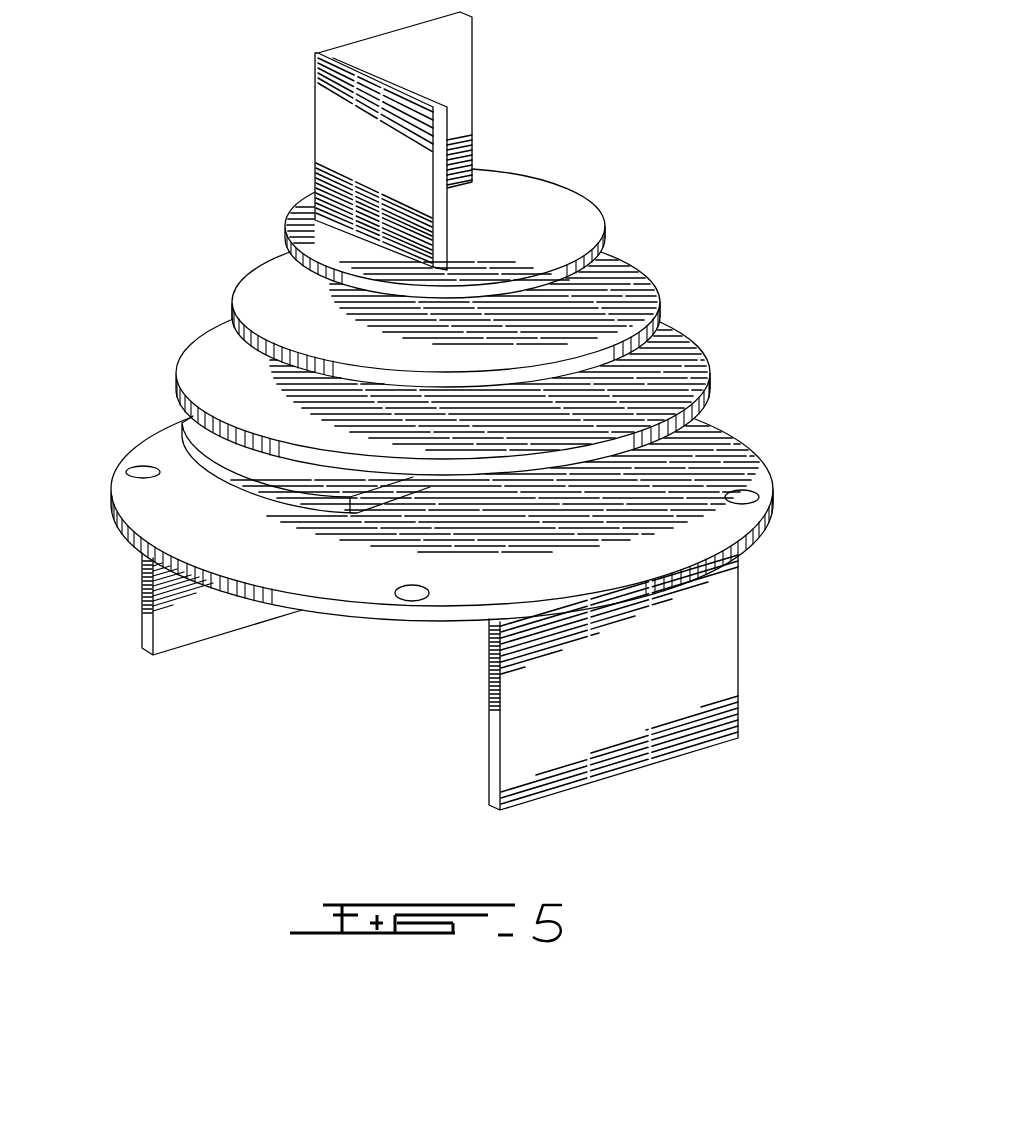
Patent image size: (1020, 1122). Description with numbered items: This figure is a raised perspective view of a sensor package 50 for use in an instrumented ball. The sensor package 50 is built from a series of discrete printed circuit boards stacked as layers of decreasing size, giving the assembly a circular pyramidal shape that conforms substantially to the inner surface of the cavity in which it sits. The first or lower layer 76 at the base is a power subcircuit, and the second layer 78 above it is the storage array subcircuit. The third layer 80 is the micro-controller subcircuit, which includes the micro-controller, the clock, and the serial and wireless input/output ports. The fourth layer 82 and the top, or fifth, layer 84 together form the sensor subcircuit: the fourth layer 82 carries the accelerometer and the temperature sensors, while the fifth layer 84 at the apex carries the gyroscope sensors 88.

The sensor package 50 is at (173, 213).
The first or lower layer 76 is at (710, 532).
The second layer 78 is at (245, 476).
The third layer 80 is at (680, 378).
The fourth layer 82 is at (630, 288).
The fifth layer 84 is at (557, 204).
The gyroscope sensors 88 is at (462, 52).